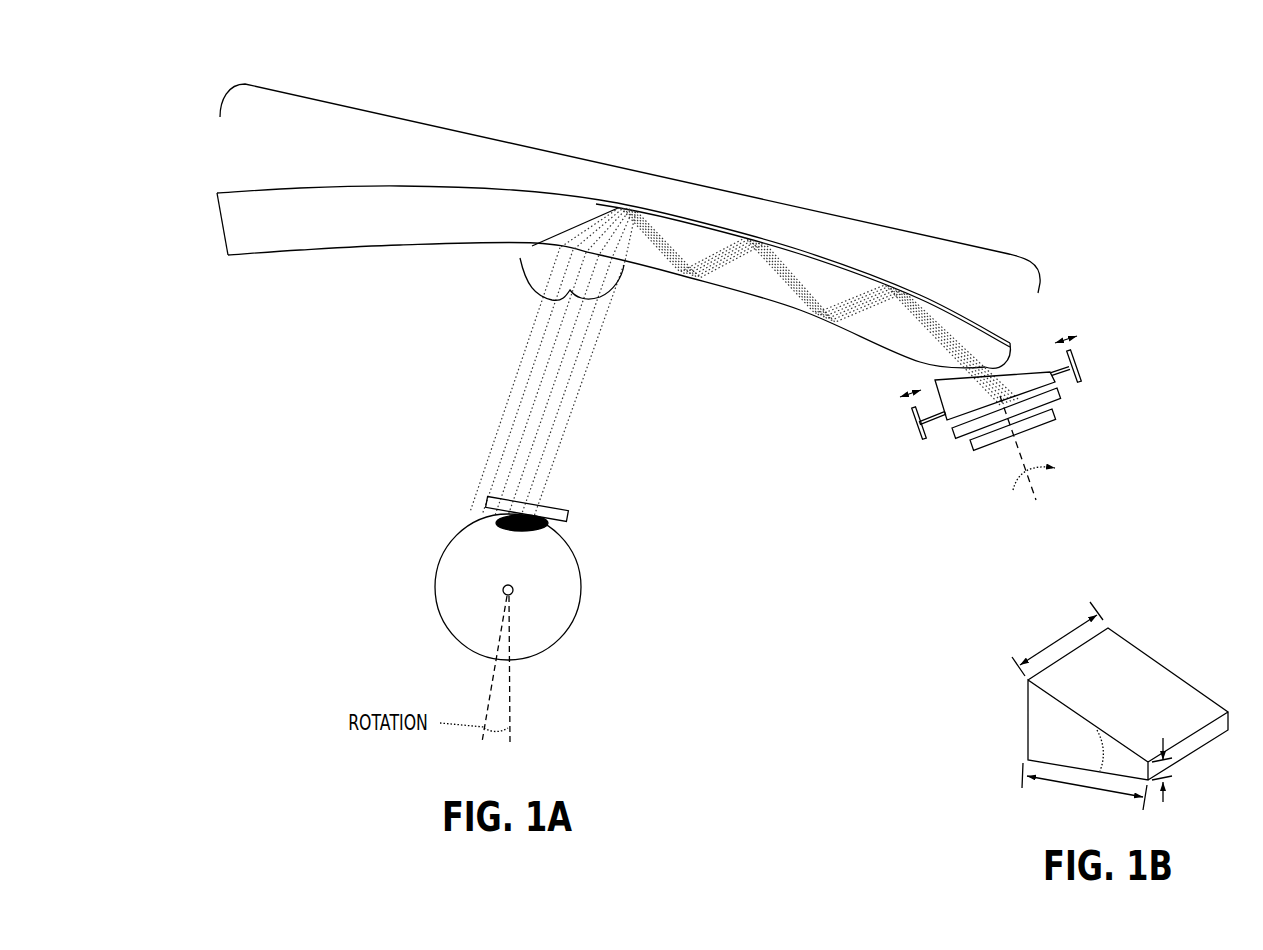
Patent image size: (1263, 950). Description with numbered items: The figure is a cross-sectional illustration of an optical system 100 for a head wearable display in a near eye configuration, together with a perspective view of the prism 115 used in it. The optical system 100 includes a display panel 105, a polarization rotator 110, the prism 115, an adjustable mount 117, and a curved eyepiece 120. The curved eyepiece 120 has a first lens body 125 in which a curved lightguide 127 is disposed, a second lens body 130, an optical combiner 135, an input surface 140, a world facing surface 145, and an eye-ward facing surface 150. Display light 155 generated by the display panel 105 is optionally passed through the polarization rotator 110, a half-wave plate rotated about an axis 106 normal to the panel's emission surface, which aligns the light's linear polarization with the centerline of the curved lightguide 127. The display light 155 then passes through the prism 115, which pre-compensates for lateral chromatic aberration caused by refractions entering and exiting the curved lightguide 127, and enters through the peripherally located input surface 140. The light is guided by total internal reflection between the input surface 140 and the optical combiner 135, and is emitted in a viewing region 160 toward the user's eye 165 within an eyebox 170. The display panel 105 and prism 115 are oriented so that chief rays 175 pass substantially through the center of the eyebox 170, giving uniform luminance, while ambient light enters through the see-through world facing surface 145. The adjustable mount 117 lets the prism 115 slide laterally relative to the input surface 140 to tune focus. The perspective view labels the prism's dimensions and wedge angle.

In FIG. 1A, the optical system 100 is at (1050, 118).
In FIG. 1A, the display panel 105 is at (972, 450).
In FIG. 1A, the axis 106 is at (1042, 500).
In FIG. 1A, the polarization rotator 110 is at (1061, 396).
In FIG. 1A, the prism 115 is at (951, 406).
In FIG. 1B, the prism 115 is at (1177, 611).
In FIG. 1A, the adjustable mount 117 is at (916, 428).
In FIG. 1A, the curved eyepiece 120 is at (803, 235).
In FIG. 1A, the first lens body 125 is at (747, 288).
In FIG. 1A, the curved lightguide 127 is at (906, 349).
In FIG. 1A, the second lens body 130 is at (292, 198).
In FIG. 1A, the optical combiner 135 is at (585, 223).
In FIG. 1A, the input surface 140 is at (1008, 352).
In FIG. 1A, the world facing surface 145 is at (722, 227).
In FIG. 1A, the eye-ward facing surface 150 is at (440, 248).
In FIG. 1A, the display light 155 is at (592, 381).
In FIG. 1A, the viewing region 160 is at (552, 301).
In FIG. 1A, the user's eye 165 is at (496, 572).
In FIG. 1A, the eyebox 170 is at (487, 497).
In FIG. 1A, the chief rays 175 is at (880, 317).